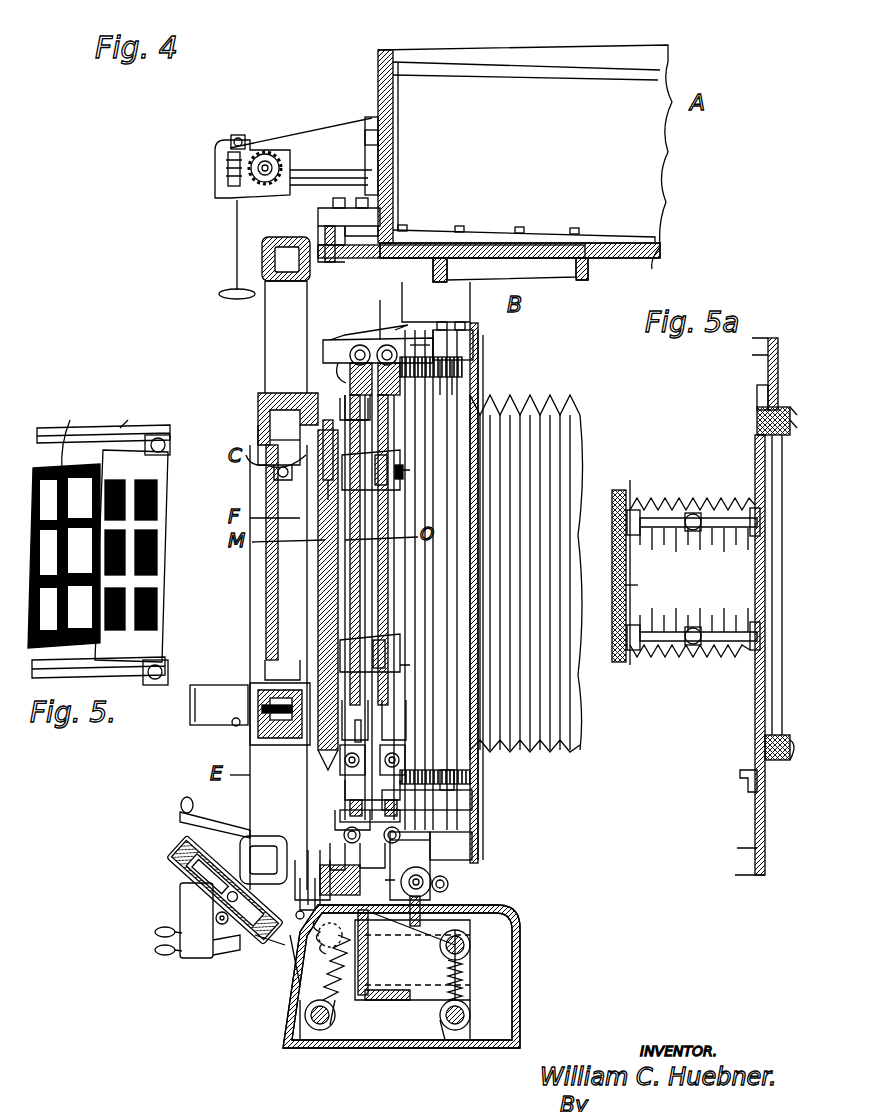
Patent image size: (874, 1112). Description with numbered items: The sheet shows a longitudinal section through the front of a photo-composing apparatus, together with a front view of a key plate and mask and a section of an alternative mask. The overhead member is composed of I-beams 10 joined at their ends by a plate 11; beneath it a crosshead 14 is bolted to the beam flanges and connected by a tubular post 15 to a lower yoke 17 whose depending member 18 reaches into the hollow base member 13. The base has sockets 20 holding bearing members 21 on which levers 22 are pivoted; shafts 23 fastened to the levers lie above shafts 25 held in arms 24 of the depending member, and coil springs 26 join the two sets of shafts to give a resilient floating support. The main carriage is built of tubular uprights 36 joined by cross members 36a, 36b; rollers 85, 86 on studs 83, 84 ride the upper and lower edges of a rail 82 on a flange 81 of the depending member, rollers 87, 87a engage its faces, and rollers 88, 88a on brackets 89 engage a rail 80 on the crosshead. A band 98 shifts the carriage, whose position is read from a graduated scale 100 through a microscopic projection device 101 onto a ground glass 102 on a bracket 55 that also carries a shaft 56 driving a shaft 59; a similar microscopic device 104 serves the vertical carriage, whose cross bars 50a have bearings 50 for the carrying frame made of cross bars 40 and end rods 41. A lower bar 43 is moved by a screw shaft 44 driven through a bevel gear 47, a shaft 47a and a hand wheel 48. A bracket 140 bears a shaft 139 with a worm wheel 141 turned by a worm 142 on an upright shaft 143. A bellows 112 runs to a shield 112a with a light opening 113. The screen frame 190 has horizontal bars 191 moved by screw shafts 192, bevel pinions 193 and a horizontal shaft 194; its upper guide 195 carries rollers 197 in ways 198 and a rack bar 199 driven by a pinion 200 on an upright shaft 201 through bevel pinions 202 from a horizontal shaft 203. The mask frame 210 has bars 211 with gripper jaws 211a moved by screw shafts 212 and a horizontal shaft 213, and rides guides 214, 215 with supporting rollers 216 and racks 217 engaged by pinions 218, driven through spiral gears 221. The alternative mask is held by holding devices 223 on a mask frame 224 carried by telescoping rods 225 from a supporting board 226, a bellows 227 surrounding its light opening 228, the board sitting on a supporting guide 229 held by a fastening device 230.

In FIG. 4, the I-beam 10 is at (525, 157).
In FIG. 4, the plate 11 is at (393, 97).
In FIG. 4, the base member 13 is at (520, 1022).
In FIG. 4, the crosshead 14 is at (566, 265).
In FIG. 4, the tubular post 15 is at (428, 425).
In FIG. 4, the yoke 17 is at (410, 866).
In FIG. 4, the depending member 18 is at (395, 1010).
In FIG. 4, the socket 20 is at (385, 980).
In FIG. 4, the bearing member 21 is at (465, 965).
In FIG. 4, the lever 22 is at (475, 915).
In FIG. 4, the shaft 23 is at (470, 945).
In FIG. 4, the arm 24 is at (350, 1035).
In FIG. 4, the shaft 25 is at (318, 1030).
In FIG. 4, the coil spring 26 is at (470, 985).
In FIG. 4, the tubular upright 36 is at (286, 337).
In FIG. 4, the cross member 36a is at (264, 252).
In FIG. 4, the cross member 36b is at (200, 816).
In FIG. 4, the cross bar 40 is at (262, 396).
In FIG. 4, the end rod 41 is at (270, 432).
In FIG. 4, the lower bar 43 is at (339, 741).
In FIG. 4, the screw shaft 44 is at (266, 590).
In FIG. 4, the bevel gear 47 is at (262, 690).
In FIG. 4, the shaft 47a is at (258, 710).
In FIG. 4, the hand wheel 48 is at (236, 726).
In FIG. 4, the bearing 50 is at (258, 412).
In FIG. 4, the cross bar 50a is at (288, 393).
In FIG. 4, the bracket 55 is at (190, 955).
In FIG. 4, the shaft 56 is at (192, 918).
In FIG. 4, the shaft 59 is at (224, 925).
In FIG. 4, the rail 80 is at (340, 262).
In FIG. 4, the flange 81 is at (340, 905).
In FIG. 4, the rail 82 is at (295, 870).
In FIG. 4, the stud 83 is at (302, 870).
In FIG. 4, the stud 84 is at (298, 916).
In FIG. 4, the roller 85 is at (308, 848).
In FIG. 4, the roller 86 is at (318, 925).
In FIG. 4, the roller 87 is at (344, 856).
In FIG. 4, the roller 87a is at (375, 849).
In FIG. 4, the roller 88 is at (325, 235).
In FIG. 4, the roller 88a is at (383, 238).
In FIG. 4, the bracket 89 is at (355, 222).
In FIG. 4, the band 98 is at (254, 860).
In FIG. 4, the graduated scale 100 is at (280, 950).
In FIG. 4, the microscopic projection device 101 is at (180, 860).
In FIG. 4, the ground glass 102 is at (185, 842).
In FIG. 4, the microscopic device 104 is at (190, 705).
In FIG. 4, the bellows 112 is at (522, 595).
In FIG. 5A, the bellows 112 is at (782, 770).
In FIG. 4, the shield 112a is at (478, 848).
In FIG. 5A, the shield 112a is at (768, 372).
In FIG. 4, the opening 113 is at (505, 425).
In FIG. 5A, the opening 113 is at (768, 716).
In FIG. 4, the shaft 139 is at (265, 168).
In FIG. 4, the bracket 140 is at (345, 118).
In FIG. 4, the worm wheel 141 is at (329, 164).
In FIG. 4, the worm 142 is at (228, 175).
In FIG. 4, the upright shaft 143 is at (236, 263).
In FIG. 4, the frame 190 is at (377, 366).
In FIG. 4, the horizontal bar 191 is at (370, 412).
In FIG. 4, the screw shaft 192 is at (368, 600).
In FIG. 4, the bevel pinion 193 is at (360, 328).
In FIG. 4, the horizontal shaft 194 is at (359, 804).
In FIG. 4, the upper guide 195 is at (359, 825).
In FIG. 4, the roller 197 is at (341, 348).
In FIG. 4, the way 198 is at (490, 812).
In FIG. 4, the rack bar 199 is at (423, 598).
In FIG. 4, the pinion 200 is at (472, 348).
In FIG. 4, the upright shaft 201 is at (455, 523).
In FIG. 4, the bevel pinion 202 is at (448, 878).
In FIG. 4, the horizontal shaft 203 is at (448, 890).
In FIG. 4, the frame 210 is at (380, 558).
In FIG. 4, the bar 211 is at (398, 398).
In FIG. 4, the gripper jaw 211a is at (405, 497).
In FIG. 4, the screw shaft 212 is at (390, 715).
In FIG. 4, the horizontal shaft 213 is at (395, 760).
In FIG. 4, the guide 214 is at (406, 340).
In FIG. 4, the guide 215 is at (398, 785).
In FIG. 4, the supporting roller 216 is at (352, 825).
In FIG. 4, the rack 217 is at (458, 795).
In FIG. 4, the pinion 218 is at (485, 770).
In FIG. 4, the spiral gear 221 is at (386, 891).
In FIG. 5A, the holding device 223 is at (634, 510).
In FIG. 5A, the mask frame 224 is at (630, 560).
In FIG. 5A, the telescoping rod 225 is at (682, 530).
In FIG. 5A, the supporting board 226 is at (760, 452).
In FIG. 5A, the bellows 227 is at (712, 505).
In FIG. 5A, the light opening 228 is at (755, 565).
In FIG. 5A, the supporting guide 229 is at (740, 778).
In FIG. 5A, the fastening device 230 is at (757, 402).